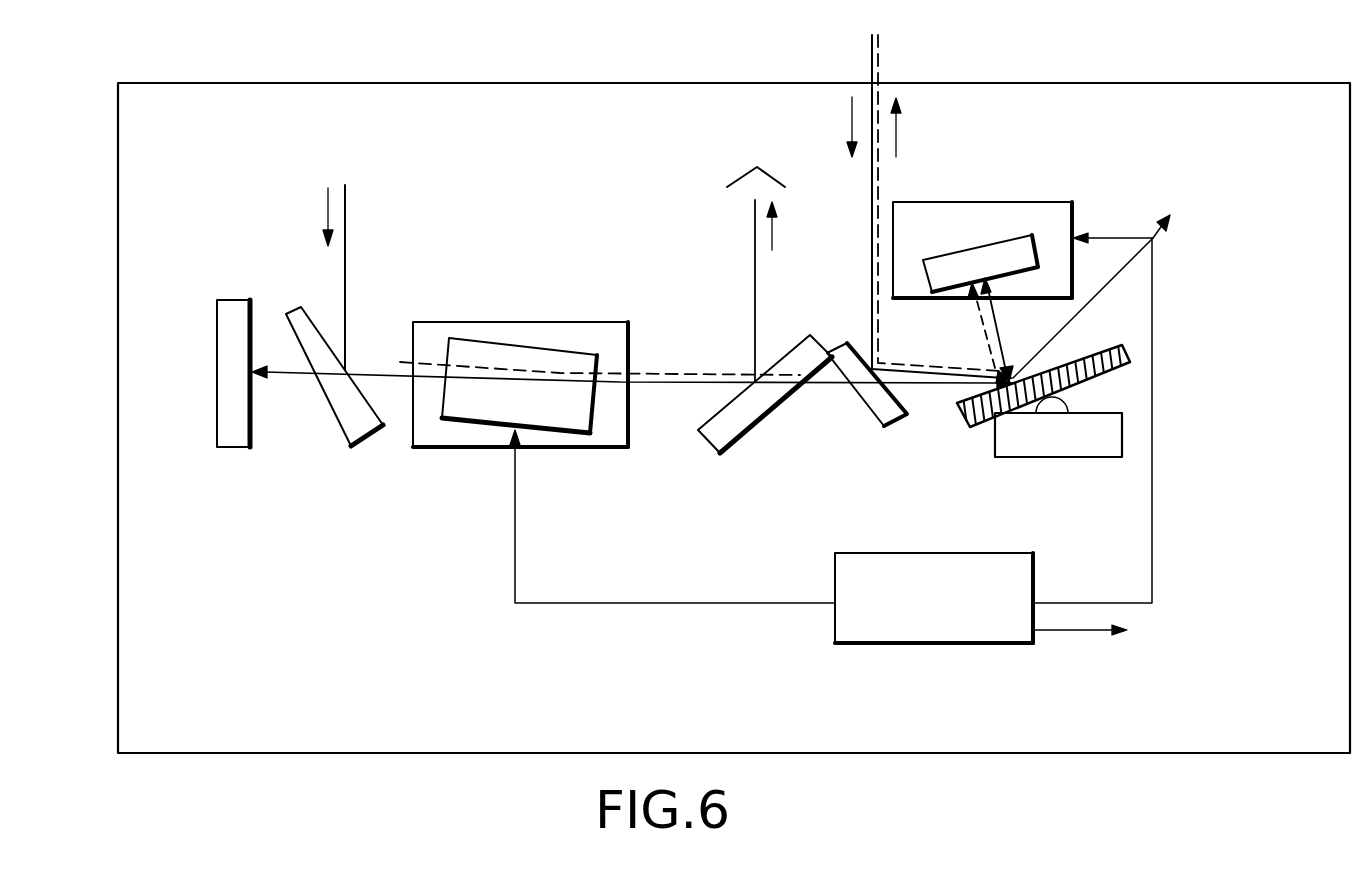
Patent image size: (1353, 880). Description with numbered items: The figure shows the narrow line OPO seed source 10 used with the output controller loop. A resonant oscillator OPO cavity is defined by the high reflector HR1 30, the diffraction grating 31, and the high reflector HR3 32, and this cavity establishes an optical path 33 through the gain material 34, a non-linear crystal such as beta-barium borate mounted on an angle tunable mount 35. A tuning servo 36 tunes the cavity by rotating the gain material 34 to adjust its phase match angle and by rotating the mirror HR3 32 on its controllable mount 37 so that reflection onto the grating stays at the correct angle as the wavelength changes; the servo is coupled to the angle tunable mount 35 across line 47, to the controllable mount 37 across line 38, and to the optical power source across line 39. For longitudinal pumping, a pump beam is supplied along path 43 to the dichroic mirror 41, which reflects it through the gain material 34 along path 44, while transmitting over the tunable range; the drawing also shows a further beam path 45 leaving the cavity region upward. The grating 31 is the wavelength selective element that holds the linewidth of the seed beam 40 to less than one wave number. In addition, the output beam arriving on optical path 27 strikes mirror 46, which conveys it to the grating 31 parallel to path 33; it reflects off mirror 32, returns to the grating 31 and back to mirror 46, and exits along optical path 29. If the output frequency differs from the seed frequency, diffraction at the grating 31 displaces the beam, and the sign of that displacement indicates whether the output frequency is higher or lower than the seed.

The seed source 10 is at (118, 190).
The optical path 27 is at (870, 55).
The optical path 29 is at (880, 58).
The high reflector HR1 30 is at (243, 300).
The diffraction grating 31 is at (1108, 365).
The high reflector HR3 32 is at (997, 258).
The optical path 33 is at (920, 384).
The gain material 34 is at (455, 335).
The angle tunable mount 35 is at (530, 325).
The tuning servo 36 is at (855, 645).
The controllable mount 37 is at (1060, 202).
The line 38 is at (1152, 525).
The line 39 is at (1085, 630).
The seed beam 40 is at (1163, 240).
The dichroic mirror 41 is at (300, 316).
The path 43 is at (345, 275).
The path 44 is at (728, 382).
The output beam 45 is at (755, 243).
The mirror 46 is at (876, 423).
The line 47 is at (605, 603).